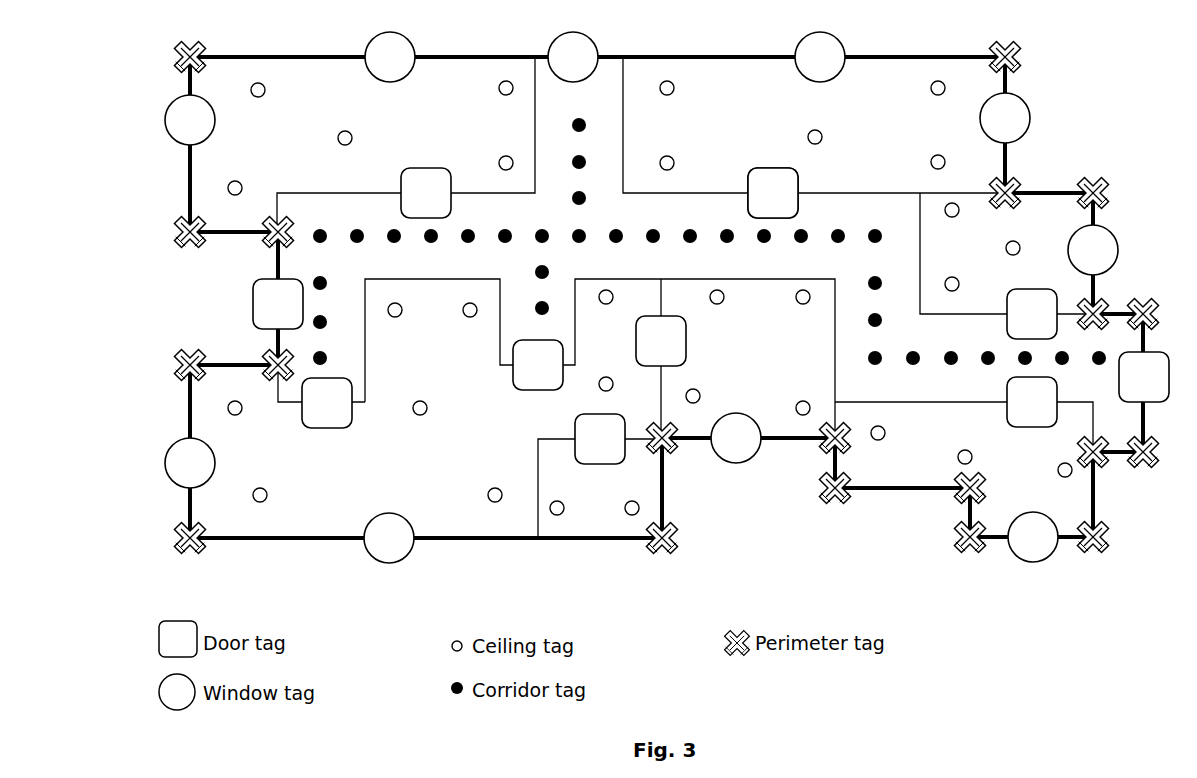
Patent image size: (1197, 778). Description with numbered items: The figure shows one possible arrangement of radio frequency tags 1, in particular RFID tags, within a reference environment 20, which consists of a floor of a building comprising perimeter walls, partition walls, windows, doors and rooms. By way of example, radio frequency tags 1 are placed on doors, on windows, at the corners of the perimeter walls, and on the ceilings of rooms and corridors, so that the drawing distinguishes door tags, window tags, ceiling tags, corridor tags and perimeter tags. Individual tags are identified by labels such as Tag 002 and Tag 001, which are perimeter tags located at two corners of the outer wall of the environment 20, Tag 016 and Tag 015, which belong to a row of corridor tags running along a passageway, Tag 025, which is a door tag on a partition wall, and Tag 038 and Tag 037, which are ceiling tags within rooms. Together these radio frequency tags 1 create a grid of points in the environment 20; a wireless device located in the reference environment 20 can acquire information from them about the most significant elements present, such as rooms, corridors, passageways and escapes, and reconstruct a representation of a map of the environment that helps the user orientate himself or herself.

The perimeter tag Tag 002 is at (173, 58).
The perimeter tag Tag 001 is at (1020, 56).
The reference environment 20 is at (620, 297).
The radio frequency tag 1 is at (336, 138).
The corridor tag Tag 016 is at (329, 284).
The corridor tag Tag 015 is at (329, 322).
The door tag Tag 025 is at (303, 431).
The ceiling tag Tag 038 is at (962, 449).
The ceiling tag Tag 037 is at (879, 442).